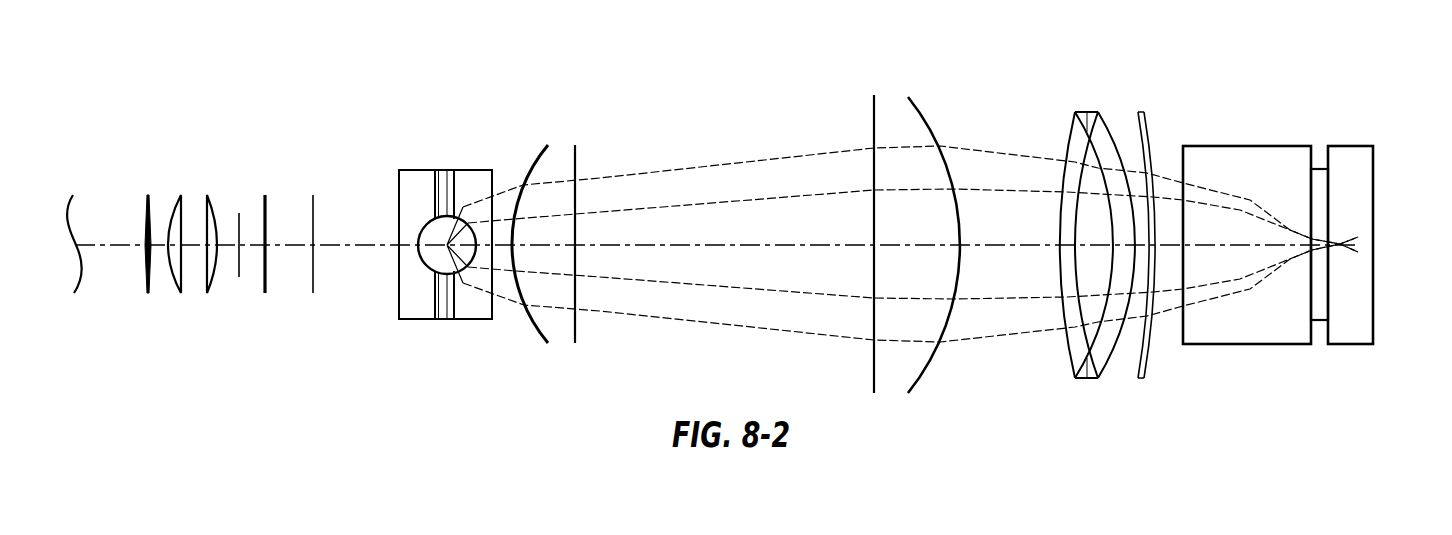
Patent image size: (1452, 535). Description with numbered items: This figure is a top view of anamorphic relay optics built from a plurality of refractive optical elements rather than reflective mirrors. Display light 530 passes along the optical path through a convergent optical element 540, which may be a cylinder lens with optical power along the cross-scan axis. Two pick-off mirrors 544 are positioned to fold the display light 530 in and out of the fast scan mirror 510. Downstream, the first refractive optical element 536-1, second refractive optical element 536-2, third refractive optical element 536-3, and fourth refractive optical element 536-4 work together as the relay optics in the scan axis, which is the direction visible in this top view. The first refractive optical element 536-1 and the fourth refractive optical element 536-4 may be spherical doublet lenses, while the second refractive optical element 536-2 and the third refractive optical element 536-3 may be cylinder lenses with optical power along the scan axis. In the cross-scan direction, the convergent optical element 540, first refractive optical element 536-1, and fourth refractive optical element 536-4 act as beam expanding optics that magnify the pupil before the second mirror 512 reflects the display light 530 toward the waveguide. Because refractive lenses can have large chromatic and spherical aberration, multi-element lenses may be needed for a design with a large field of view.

The convergent optical element 540 is at (148, 195).
The first refractive optical element 536-1 is at (207, 290).
The display light 530 is at (333, 245).
The fast scan mirror 510 is at (428, 218).
The pick-off mirrors 544 is at (413, 319).
The second refractive optical element 536-2 is at (534, 163).
The third refractive optical element 536-3 is at (922, 107).
The fourth refractive optical element 536-4 is at (1098, 112).
The second mirror 512 is at (1318, 169).